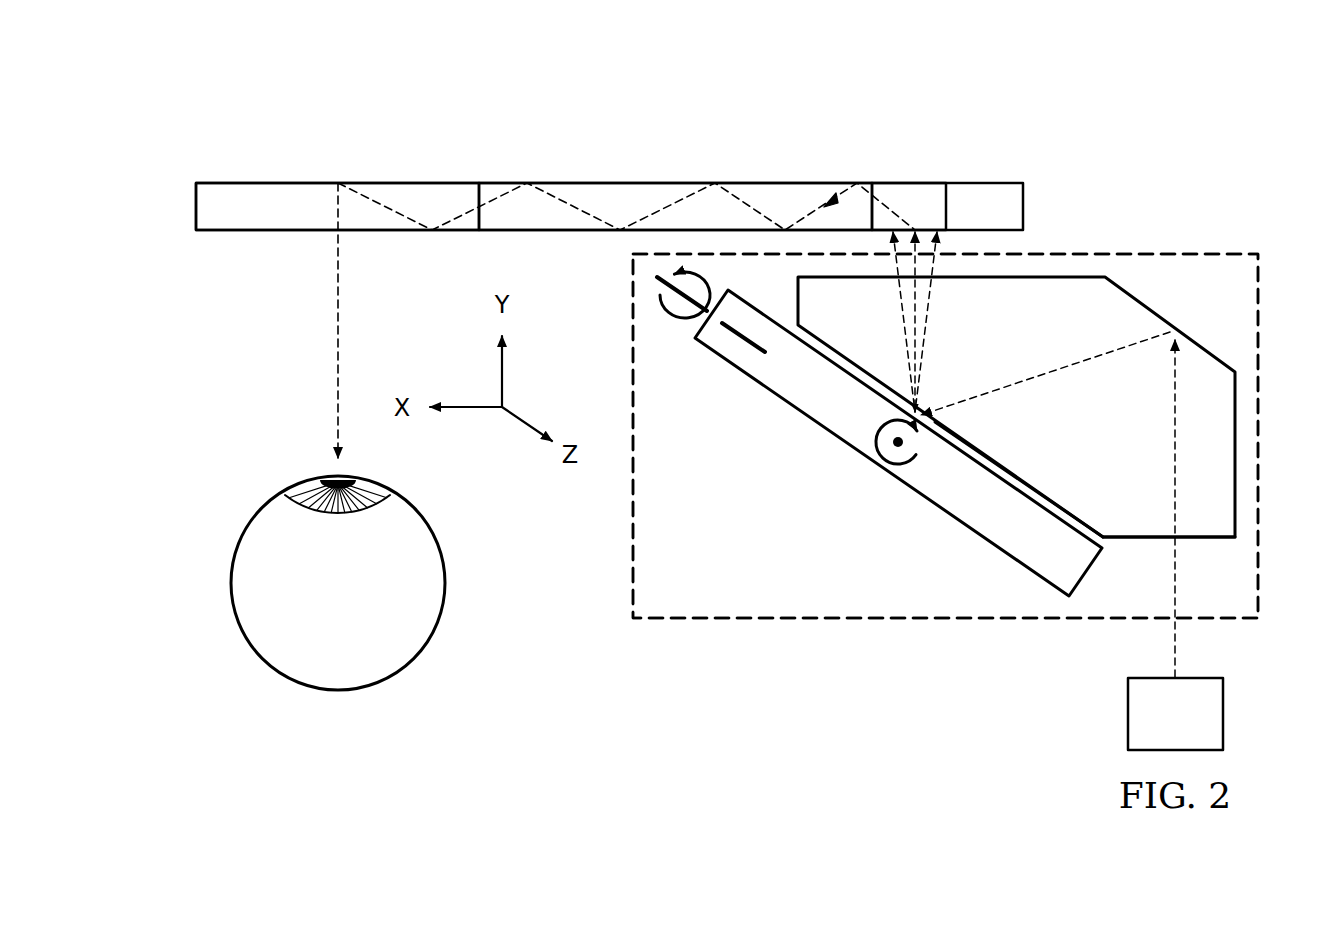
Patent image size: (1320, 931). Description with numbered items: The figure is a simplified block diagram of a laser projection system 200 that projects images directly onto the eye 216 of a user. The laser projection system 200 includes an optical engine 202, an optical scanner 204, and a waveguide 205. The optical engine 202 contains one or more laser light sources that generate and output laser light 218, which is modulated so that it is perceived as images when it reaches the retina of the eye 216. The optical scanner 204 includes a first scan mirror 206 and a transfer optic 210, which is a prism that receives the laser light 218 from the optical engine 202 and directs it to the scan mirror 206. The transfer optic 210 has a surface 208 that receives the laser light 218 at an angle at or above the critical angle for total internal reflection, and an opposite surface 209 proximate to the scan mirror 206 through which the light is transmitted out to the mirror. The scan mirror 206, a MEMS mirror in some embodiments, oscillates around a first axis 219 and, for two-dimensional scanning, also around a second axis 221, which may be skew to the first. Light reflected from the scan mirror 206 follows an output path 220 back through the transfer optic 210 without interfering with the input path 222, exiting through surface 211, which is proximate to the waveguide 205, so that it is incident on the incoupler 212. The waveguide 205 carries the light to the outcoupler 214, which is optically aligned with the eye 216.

The laser projection system 200 is at (318, 119).
The optical engine 202 is at (1175, 714).
The optical scanner 204 is at (946, 628).
The waveguide 205 is at (627, 192).
The first scan mirror 206 is at (790, 403).
The surface 208 is at (1194, 328).
The surface 209 is at (1067, 499).
The transfer optic 210 is at (1198, 540).
The surface 211 is at (1141, 223).
The incoupler 212 is at (912, 192).
The outcoupler 214 is at (265, 198).
The eye 216 is at (246, 642).
The laser light 218 is at (1178, 632).
The first axis 219 is at (881, 460).
The output path 220 is at (948, 328).
The second axis 221 is at (702, 336).
The input path 222 is at (1052, 374).